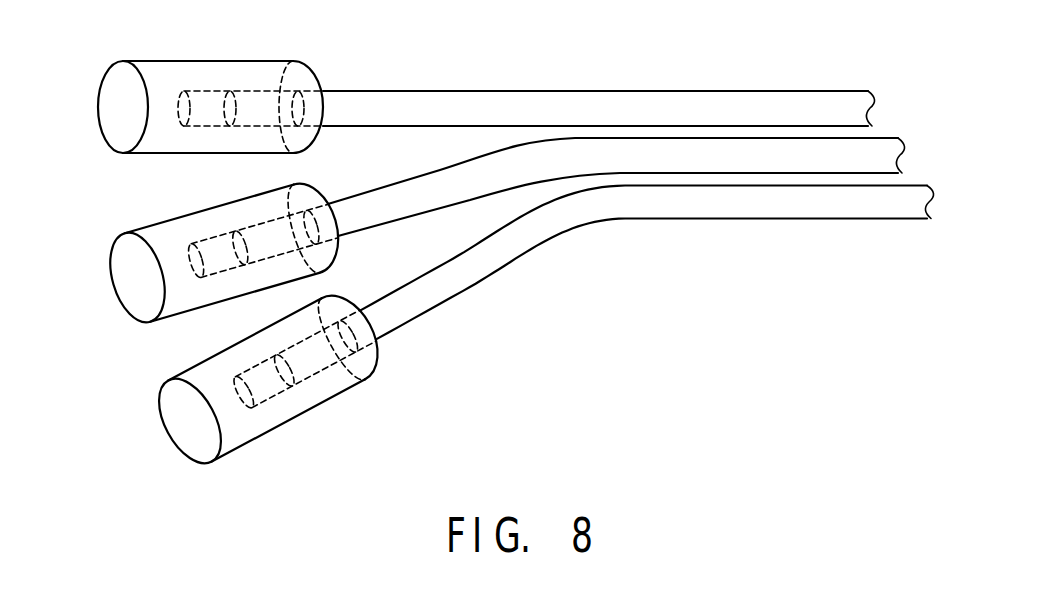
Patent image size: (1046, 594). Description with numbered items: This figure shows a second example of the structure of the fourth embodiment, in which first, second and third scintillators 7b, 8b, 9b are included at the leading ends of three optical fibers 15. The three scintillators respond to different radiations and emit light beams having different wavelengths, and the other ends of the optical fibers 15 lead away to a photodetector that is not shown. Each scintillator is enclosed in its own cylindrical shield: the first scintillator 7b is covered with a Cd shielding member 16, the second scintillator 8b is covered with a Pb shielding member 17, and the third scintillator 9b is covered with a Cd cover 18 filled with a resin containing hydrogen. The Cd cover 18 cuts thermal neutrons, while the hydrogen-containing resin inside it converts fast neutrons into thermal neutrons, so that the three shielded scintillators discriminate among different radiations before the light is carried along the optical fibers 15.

The optical fibers 15 is at (828, 203).
The Cd shielding member 16 is at (256, 60).
The Pb shielding member 17 is at (143, 290).
The Cd cover 18 is at (202, 427).
The first scintillator 7b is at (210, 97).
The second scintillator 8b is at (215, 242).
The third scintillator 9b is at (300, 413).